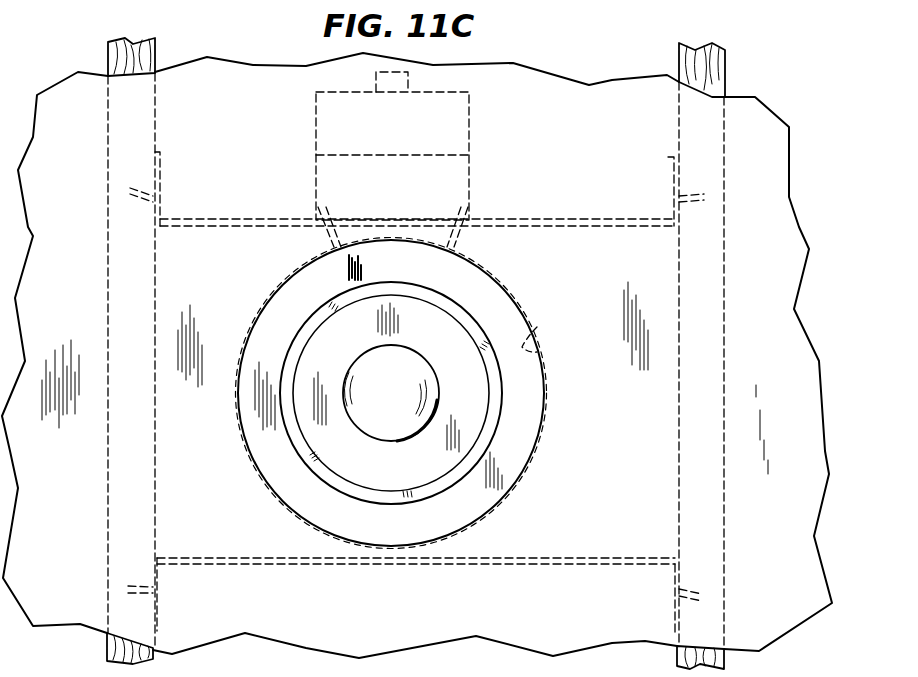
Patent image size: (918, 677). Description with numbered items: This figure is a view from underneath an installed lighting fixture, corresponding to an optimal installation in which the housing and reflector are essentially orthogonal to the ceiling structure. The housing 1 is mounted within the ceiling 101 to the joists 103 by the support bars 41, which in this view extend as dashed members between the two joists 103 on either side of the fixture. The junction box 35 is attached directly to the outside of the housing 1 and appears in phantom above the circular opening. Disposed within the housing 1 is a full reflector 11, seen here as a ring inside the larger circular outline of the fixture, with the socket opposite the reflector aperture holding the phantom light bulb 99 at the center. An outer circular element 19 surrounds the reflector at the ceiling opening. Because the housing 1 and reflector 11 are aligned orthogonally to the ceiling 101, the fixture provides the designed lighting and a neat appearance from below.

The housing 1 is at (537, 327).
The full reflector 11 is at (473, 333).
The outer ring 19 is at (526, 461).
The junction box 35 is at (469, 140).
The support bars 41 is at (218, 218).
The light bulb 99 is at (439, 398).
The ceiling 101 is at (610, 100).
The joists 103 is at (112, 58).